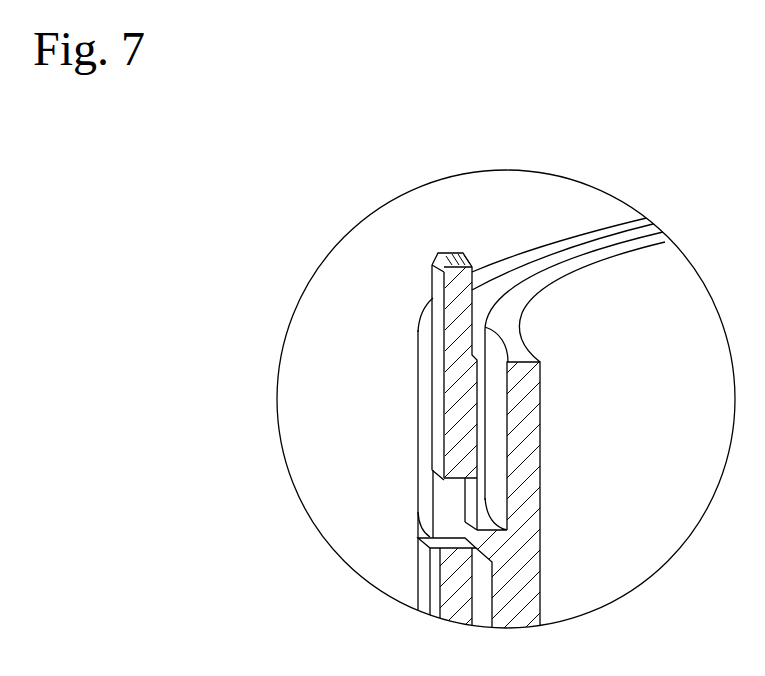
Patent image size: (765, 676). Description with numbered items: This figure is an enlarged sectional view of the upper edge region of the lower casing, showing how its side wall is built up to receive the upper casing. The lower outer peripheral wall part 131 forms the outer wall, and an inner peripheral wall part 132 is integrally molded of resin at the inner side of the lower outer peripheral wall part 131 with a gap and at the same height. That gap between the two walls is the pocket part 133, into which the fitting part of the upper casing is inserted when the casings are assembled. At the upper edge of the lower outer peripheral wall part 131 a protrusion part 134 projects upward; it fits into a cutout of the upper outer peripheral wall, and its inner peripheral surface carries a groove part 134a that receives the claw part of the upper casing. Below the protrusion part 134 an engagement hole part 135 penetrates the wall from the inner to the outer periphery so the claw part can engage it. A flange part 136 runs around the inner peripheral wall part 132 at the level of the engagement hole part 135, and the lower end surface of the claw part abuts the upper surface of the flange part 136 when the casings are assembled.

The lower outer peripheral wall part 131 is at (418, 417).
The inner peripheral wall part 132 is at (542, 452).
The pocket part 133 is at (498, 292).
The protrusion part 134 is at (437, 288).
The groove part 134a is at (485, 329).
The engagement hole part 135 is at (443, 510).
The flange part 136 is at (475, 507).